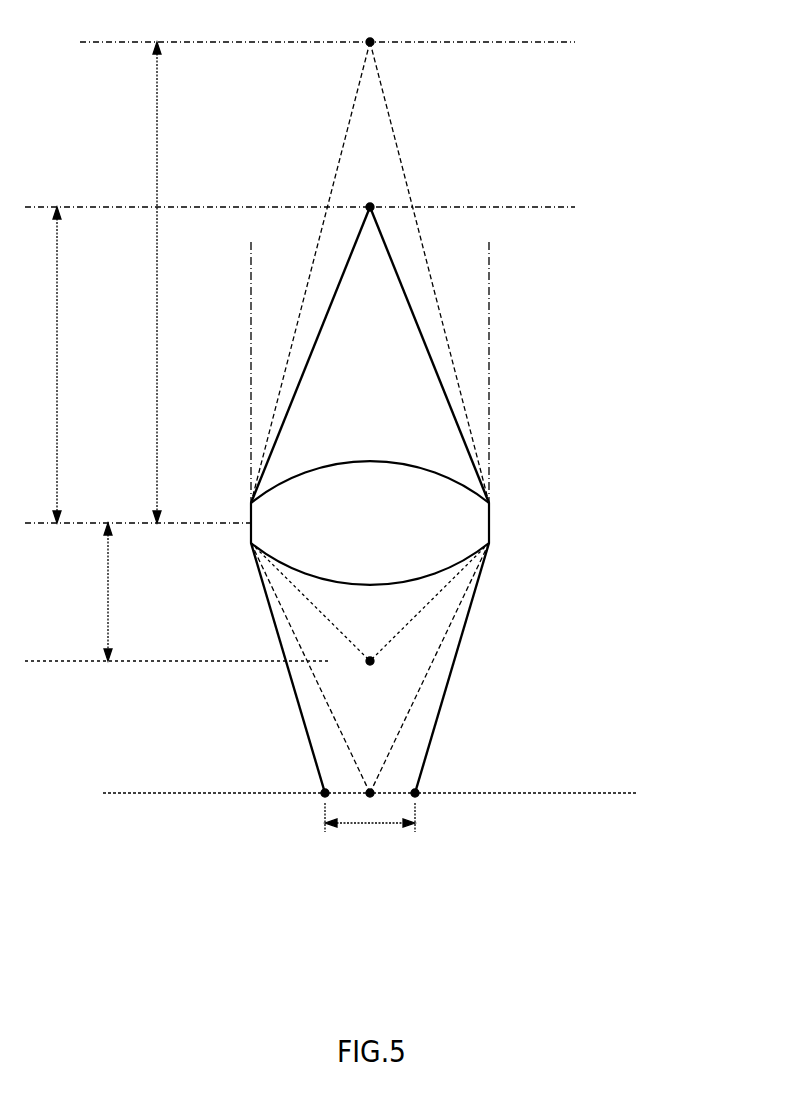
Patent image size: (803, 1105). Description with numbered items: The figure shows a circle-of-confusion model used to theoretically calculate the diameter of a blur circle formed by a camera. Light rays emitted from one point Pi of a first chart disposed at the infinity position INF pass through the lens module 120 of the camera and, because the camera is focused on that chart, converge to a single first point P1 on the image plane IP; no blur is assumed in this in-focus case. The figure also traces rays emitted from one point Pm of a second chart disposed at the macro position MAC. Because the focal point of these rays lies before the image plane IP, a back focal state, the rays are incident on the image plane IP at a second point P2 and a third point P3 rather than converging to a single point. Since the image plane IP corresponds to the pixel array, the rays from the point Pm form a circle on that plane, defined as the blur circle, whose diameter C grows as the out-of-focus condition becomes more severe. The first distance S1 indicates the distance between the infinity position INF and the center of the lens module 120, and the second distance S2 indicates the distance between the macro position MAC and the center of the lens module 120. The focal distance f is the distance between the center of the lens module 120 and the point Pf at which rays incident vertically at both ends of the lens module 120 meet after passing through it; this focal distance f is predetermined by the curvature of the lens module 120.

The lens module 120 is at (472, 528).
The infinity position INF is at (348, 44).
The macro position MAC is at (321, 210).
The image plane IP is at (385, 794).
The point of the first chart Pi is at (373, 27).
The point of the second chart Pm is at (375, 191).
The focal point Pf is at (370, 676).
The first point P1 is at (386, 782).
The second point P2 is at (308, 782).
The third point P3 is at (433, 782).
The first distance S1 is at (171, 282).
The second distance S2 is at (72, 365).
The focal distance f is at (120, 592).
The diameter of the blur circle C is at (370, 830).